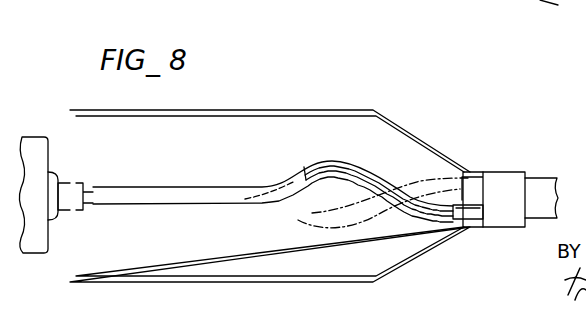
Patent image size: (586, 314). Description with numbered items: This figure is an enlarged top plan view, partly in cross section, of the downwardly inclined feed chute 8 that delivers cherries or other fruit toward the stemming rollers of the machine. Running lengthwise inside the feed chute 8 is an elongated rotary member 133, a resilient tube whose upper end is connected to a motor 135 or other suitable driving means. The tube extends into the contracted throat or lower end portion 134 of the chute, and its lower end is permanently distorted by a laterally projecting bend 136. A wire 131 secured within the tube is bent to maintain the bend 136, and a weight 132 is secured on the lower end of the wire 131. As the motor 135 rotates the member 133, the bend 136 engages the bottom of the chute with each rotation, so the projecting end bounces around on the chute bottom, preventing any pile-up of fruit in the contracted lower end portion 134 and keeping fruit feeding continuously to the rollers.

The feed chute 8 is at (339, 106).
The wire 131 is at (283, 180).
The weight 132 is at (466, 172).
The rotary member 133 is at (229, 187).
The contracted lower end portion 134 is at (502, 185).
The motor 135 is at (36, 160).
The laterally projecting bend 136 is at (343, 165).